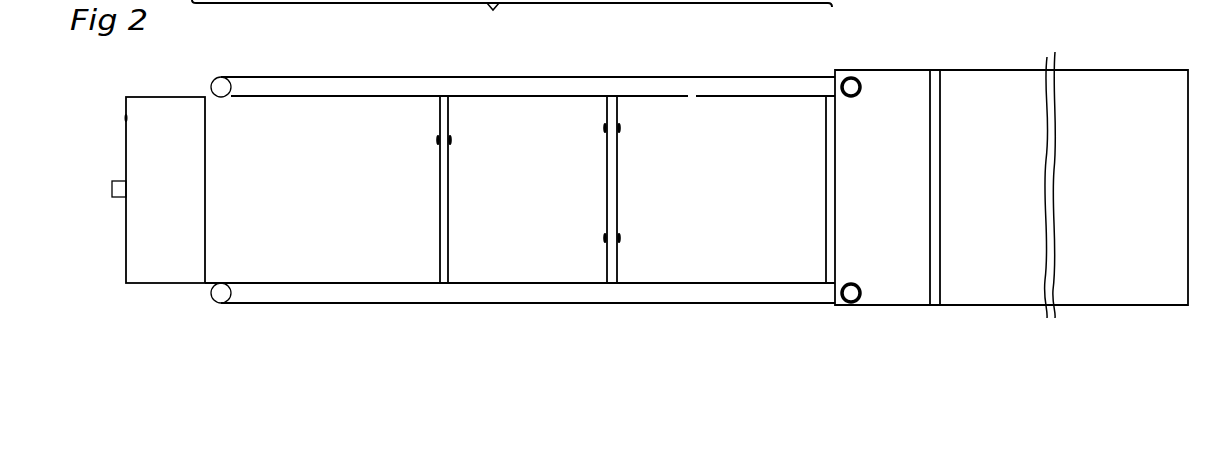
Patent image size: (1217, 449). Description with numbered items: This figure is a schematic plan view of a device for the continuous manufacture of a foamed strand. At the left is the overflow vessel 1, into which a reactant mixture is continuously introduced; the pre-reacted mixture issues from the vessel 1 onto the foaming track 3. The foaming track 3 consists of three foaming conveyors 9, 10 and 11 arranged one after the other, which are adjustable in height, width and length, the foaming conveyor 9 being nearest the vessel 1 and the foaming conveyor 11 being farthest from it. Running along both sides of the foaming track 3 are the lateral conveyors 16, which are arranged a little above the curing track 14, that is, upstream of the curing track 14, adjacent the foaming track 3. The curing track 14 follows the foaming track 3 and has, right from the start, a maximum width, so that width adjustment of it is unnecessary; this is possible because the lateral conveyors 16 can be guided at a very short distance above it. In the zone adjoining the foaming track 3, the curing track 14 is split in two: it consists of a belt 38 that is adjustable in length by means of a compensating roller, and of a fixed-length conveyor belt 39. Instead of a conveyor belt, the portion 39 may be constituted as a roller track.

The overflow vessel 1 is at (190, 97).
The foaming track 3 is at (512, 24).
The foaming conveyor 9 is at (322, 189).
The foaming conveyor 10 is at (523, 189).
The foaming conveyor 11 is at (721, 189).
The curing track 14 is at (1011, 187).
The lateral conveyors 16 is at (613, 77).
The belt 38 is at (896, 295).
The fixed-length conveyor belt 39 is at (1003, 78).